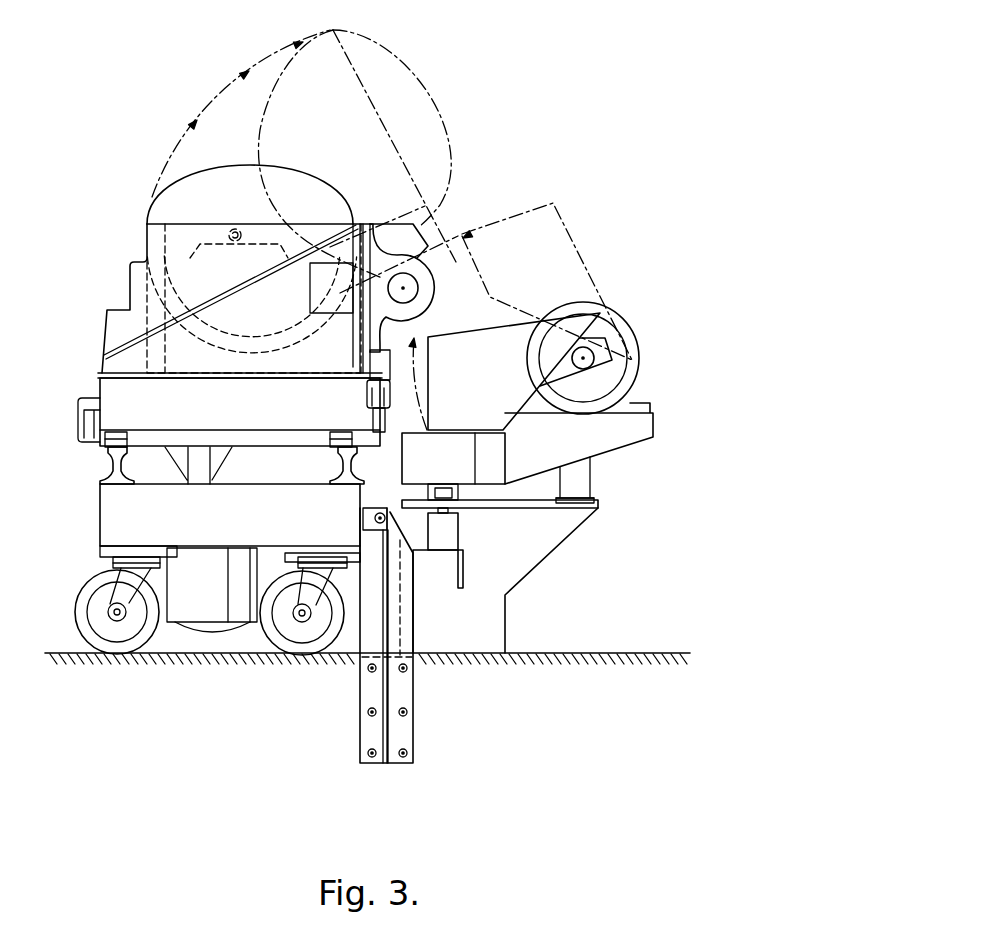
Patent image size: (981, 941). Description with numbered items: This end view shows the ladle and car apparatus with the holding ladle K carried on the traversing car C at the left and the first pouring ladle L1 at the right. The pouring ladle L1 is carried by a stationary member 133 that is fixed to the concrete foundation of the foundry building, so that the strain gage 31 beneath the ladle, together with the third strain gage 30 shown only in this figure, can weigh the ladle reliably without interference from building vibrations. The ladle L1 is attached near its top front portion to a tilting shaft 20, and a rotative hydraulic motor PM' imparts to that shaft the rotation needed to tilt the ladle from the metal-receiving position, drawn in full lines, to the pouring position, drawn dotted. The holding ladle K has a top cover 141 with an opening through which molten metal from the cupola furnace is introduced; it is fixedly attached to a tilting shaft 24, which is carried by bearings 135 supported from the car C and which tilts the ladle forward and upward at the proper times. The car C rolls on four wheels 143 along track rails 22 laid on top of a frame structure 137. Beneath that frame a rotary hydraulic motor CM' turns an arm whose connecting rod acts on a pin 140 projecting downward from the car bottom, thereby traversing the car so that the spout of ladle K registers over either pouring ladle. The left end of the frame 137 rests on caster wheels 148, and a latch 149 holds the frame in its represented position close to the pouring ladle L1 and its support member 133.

The top cover 141 is at (241, 113).
The holding ladle K is at (138, 231).
The tilting shaft 24 is at (420, 252).
The bearings 135 is at (432, 317).
The traversing car C is at (91, 384).
The wheels 143 is at (113, 446).
The track rails 22 is at (122, 466).
The pin 140 is at (216, 469).
The frame structure 137 is at (100, 512).
The hydraulic motor CM' is at (212, 622).
The caster wheels 148 is at (76, 612).
The latch 149 is at (380, 512).
The pouring ladle L1 is at (514, 371).
The hydraulic motor PM' is at (611, 358).
The tilting shaft 20 is at (596, 363).
The strain gage 30 is at (592, 477).
The strain gage 31 is at (459, 533).
The stationary member 133 is at (490, 620).